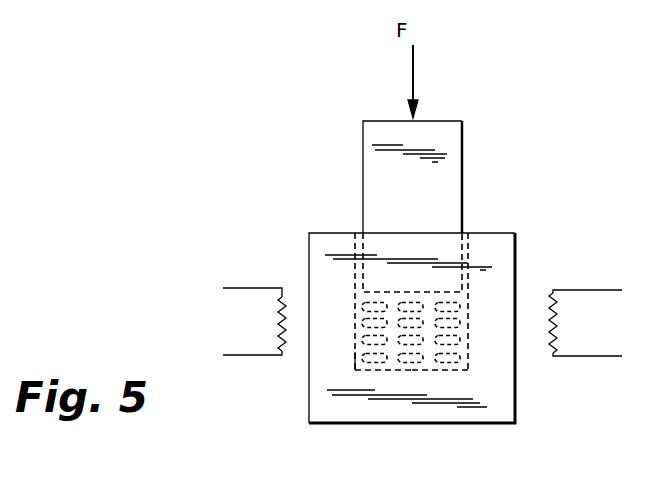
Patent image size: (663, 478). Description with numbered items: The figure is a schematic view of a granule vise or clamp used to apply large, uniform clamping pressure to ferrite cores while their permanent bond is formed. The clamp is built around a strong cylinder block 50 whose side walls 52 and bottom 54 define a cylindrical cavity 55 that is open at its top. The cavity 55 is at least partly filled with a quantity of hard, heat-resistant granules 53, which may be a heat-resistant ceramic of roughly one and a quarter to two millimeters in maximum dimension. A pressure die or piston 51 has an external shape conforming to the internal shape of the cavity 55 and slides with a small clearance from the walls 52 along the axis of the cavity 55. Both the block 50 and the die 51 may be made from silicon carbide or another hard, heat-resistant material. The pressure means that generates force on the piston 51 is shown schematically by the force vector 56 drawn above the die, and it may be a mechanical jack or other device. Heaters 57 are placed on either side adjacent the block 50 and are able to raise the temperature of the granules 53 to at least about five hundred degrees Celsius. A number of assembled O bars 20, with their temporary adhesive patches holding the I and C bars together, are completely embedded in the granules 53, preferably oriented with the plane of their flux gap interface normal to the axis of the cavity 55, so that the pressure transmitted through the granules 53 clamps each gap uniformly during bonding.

The O bar 20 is at (460, 340).
The cylinder block 50 is at (332, 238).
The pressure die or piston 51 is at (373, 174).
The side walls 52 is at (353, 290).
The granules 53 is at (458, 368).
The bottom 54 is at (393, 368).
The cylindrical cavity 55 is at (355, 353).
The force vector 56 is at (413, 72).
The heaters 57 is at (277, 323).